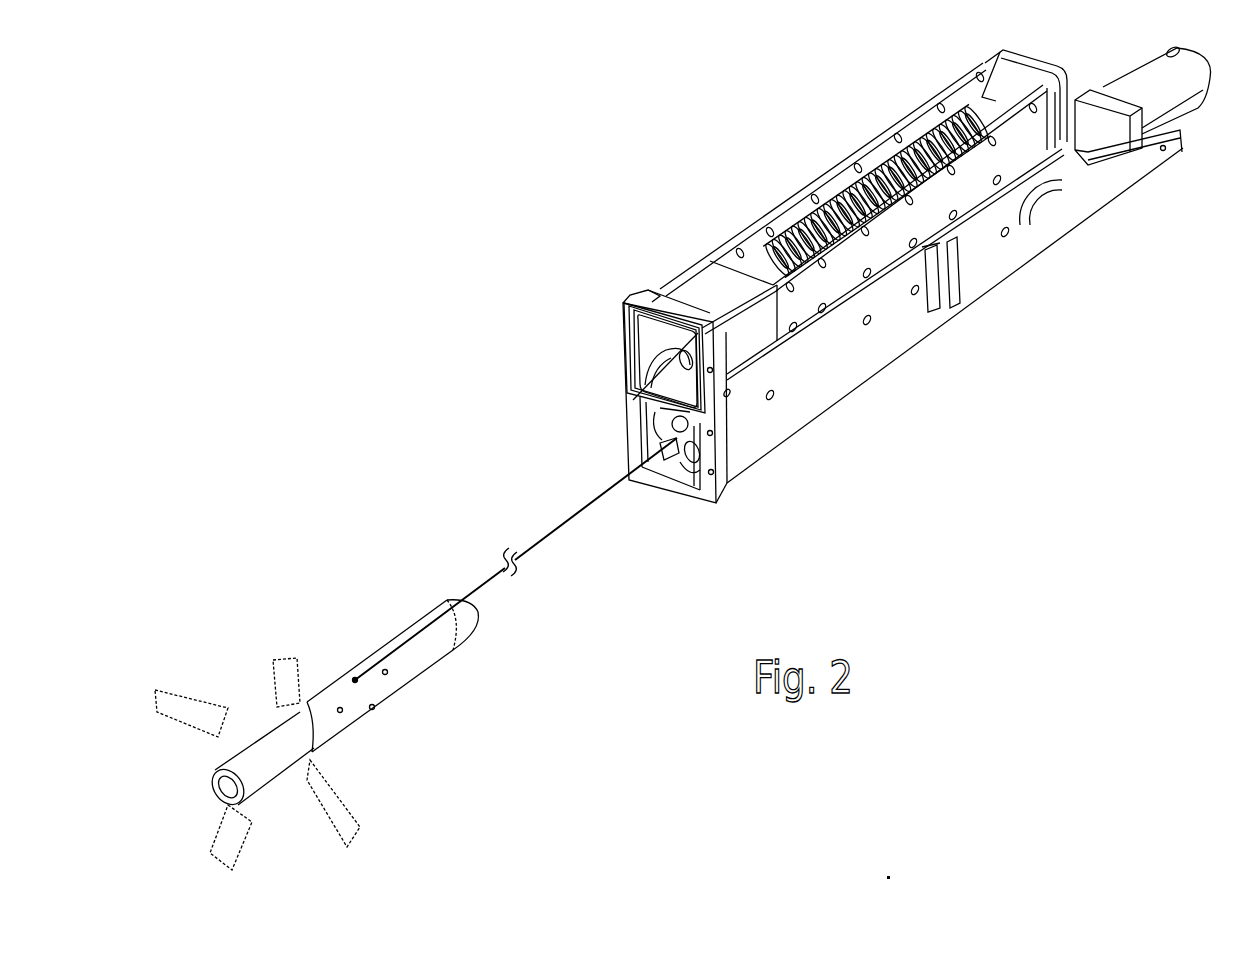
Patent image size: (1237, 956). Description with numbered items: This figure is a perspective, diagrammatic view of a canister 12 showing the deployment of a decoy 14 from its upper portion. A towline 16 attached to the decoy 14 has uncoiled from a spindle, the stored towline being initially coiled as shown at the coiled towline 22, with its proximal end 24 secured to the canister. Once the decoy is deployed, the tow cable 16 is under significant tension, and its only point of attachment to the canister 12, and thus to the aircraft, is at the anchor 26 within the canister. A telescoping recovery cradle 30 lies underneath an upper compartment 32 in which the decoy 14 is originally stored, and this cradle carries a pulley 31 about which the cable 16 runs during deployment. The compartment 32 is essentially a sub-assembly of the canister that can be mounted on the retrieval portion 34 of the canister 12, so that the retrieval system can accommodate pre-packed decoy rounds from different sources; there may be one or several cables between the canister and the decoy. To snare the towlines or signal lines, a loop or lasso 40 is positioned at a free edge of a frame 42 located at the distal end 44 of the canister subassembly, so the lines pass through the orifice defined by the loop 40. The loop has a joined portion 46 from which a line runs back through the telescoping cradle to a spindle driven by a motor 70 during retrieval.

The canister 12 is at (733, 231).
The decoy 14 is at (405, 617).
The towline 16 is at (542, 545).
The coiled towline 22 is at (887, 167).
The proximal end 24 is at (975, 102).
The anchor 26 is at (1002, 56).
The telescoping recovery cradle 30 is at (668, 461).
The pulley 31 is at (702, 455).
The upper compartment 32 is at (670, 340).
The retrieval portion 34 is at (903, 335).
The loop 40 is at (655, 297).
The frame 42 is at (655, 291).
The distal end 44 is at (618, 357).
The joined portion 46 is at (700, 422).
The motor 70 is at (1194, 129).